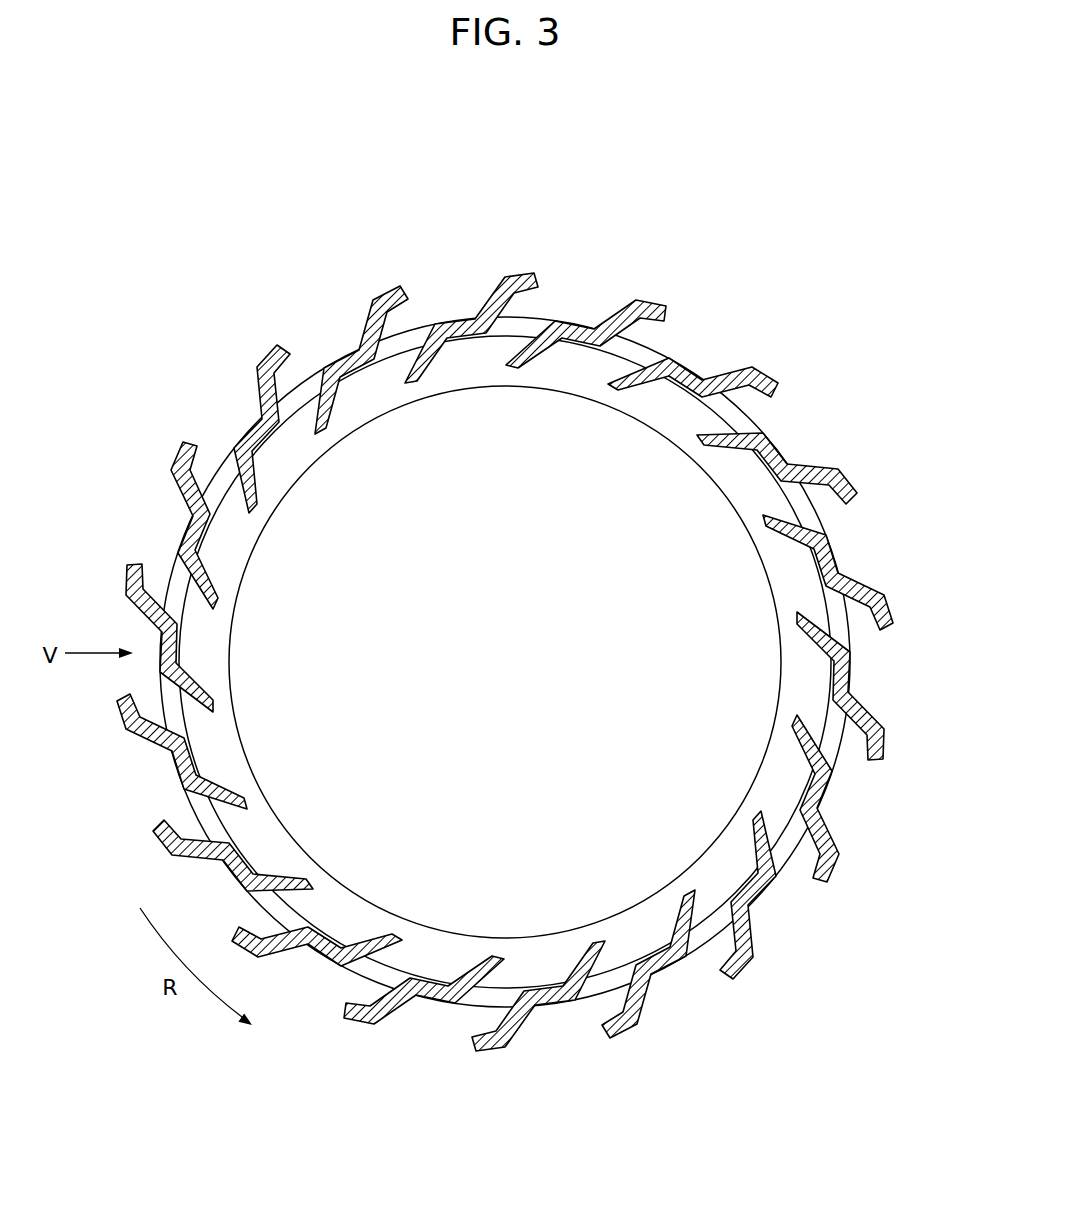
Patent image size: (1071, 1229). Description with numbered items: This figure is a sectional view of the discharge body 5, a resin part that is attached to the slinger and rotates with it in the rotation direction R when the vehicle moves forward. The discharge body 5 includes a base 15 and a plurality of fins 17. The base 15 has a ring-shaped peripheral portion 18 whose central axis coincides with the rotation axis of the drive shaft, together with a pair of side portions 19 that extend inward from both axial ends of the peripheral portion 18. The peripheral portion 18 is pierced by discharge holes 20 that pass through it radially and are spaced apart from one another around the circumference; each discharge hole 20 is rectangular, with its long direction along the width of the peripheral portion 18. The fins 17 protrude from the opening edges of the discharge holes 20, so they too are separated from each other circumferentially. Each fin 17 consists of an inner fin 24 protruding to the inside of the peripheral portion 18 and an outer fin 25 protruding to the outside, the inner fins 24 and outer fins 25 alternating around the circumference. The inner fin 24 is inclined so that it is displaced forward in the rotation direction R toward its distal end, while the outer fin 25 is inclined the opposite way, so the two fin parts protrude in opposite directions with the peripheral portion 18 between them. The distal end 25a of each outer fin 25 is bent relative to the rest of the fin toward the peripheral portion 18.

The discharge body 5 is at (856, 200).
The base 15 is at (556, 322).
The fins 17 is at (368, 318).
The peripheral portion 18 is at (857, 638).
The side portions 19 is at (761, 505).
The discharge holes 20 is at (413, 333).
The inner fin 24 is at (667, 357).
The outer fin 25 is at (622, 315).
The distal end 25a is at (650, 307).